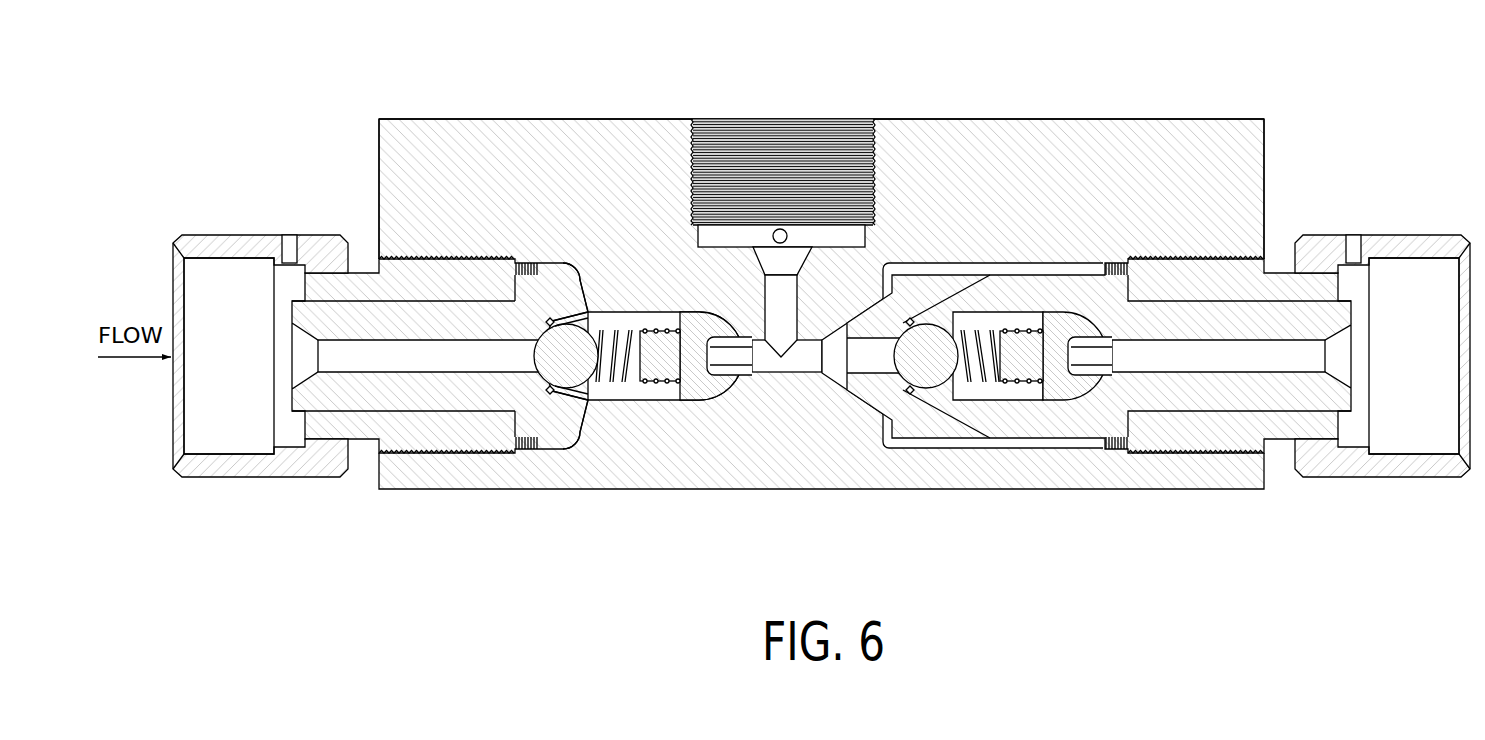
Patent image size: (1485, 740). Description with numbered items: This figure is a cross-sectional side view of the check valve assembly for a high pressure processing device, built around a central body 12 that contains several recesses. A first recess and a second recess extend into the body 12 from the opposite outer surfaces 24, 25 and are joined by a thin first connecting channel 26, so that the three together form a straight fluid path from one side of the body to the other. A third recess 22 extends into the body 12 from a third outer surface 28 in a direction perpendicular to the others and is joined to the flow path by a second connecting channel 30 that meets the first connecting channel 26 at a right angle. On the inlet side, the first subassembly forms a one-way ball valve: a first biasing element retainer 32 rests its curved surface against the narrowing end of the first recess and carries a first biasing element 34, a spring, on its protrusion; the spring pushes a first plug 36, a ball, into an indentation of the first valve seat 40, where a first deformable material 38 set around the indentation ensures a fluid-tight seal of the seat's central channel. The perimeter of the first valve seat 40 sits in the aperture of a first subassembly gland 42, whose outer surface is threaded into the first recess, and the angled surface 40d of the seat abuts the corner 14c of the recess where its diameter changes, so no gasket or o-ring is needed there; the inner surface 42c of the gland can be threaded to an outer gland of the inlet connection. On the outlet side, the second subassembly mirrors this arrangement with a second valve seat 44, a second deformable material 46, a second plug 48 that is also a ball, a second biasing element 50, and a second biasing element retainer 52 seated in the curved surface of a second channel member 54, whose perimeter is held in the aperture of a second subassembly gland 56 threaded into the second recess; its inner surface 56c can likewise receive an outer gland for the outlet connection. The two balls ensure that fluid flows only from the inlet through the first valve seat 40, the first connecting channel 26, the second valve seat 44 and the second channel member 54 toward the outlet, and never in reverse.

The central body 12 is at (1207, 152).
The corner of first recess 14c is at (590, 405).
The third recess 22 is at (813, 150).
The outer surface 24 is at (379, 152).
The outer surface 25 is at (1265, 157).
The first connecting channel 26 is at (800, 357).
The third outer surface 28 is at (432, 119).
The second connecting channel 30 is at (782, 303).
The first biasing element retainer 32 is at (695, 306).
The first biasing element 34 is at (617, 316).
The first plug 36 is at (525, 379).
The first deformable material 38 is at (548, 404).
The first valve seat 40 is at (360, 393).
The angled surface of first valve seat 40d is at (585, 403).
The first subassembly gland 42 is at (320, 235).
The inner surface of first subassembly gland 42c is at (213, 452).
The second valve seat 44 is at (928, 258).
The second deformable material 46 is at (912, 405).
The second plug 48 is at (943, 313).
The second biasing element 50 is at (973, 387).
The second biasing element retainer 52 is at (1063, 409).
The second channel member 54 is at (1282, 392).
The second subassembly gland 56 is at (1400, 467).
The inner surface of second subassembly gland 56c is at (1388, 260).